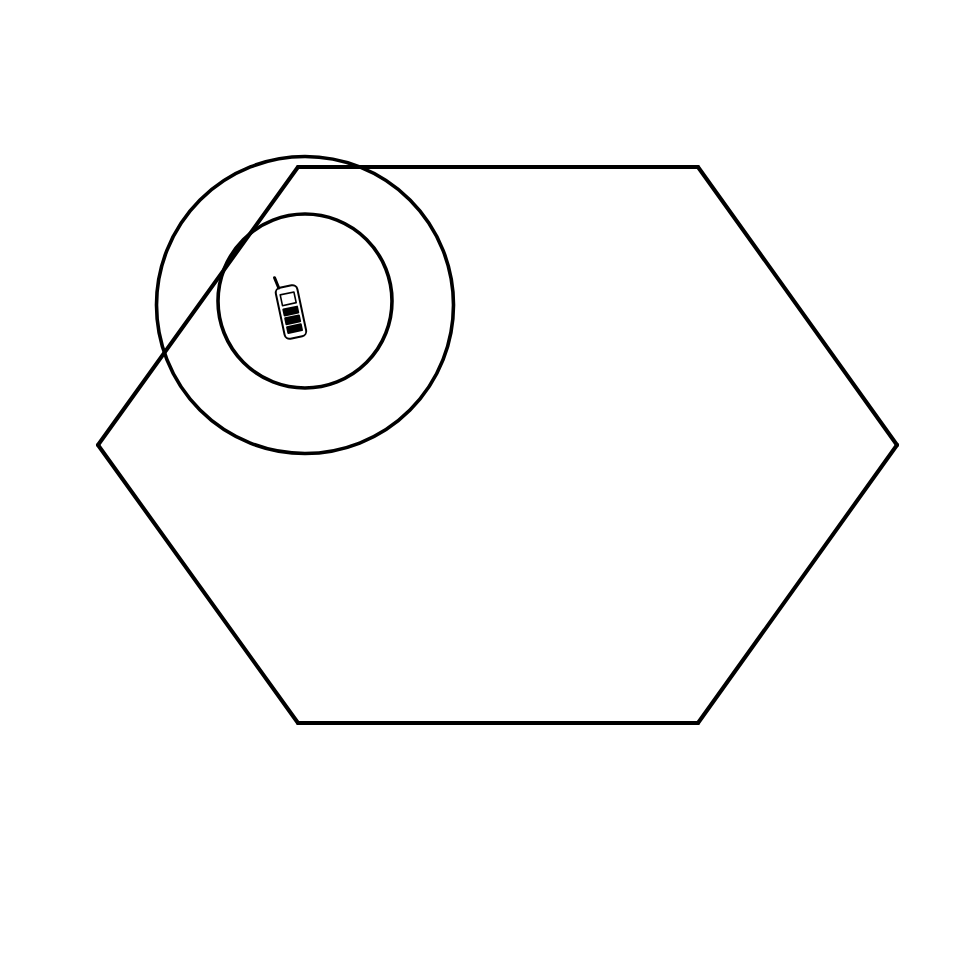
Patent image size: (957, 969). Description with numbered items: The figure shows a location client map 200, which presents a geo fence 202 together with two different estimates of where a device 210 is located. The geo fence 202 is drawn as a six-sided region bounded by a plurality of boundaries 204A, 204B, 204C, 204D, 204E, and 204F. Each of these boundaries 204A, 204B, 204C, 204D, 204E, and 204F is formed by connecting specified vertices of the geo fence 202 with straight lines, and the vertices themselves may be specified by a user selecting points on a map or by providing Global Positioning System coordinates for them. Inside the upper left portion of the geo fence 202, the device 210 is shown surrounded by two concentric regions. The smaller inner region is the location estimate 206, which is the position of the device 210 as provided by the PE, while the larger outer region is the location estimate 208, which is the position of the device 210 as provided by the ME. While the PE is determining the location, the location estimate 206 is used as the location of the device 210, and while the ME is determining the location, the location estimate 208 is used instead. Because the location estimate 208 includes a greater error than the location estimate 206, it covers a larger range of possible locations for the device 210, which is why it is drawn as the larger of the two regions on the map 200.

The location client map 200 is at (143, 95).
The geo fence 202 is at (608, 196).
The boundary 204A is at (473, 167).
The boundary 204B is at (119, 414).
The boundary 204C is at (219, 610).
The boundary 204D is at (540, 722).
The boundary 204E is at (818, 556).
The boundary 204F is at (825, 344).
The location estimate 206 is at (338, 247).
The location estimate 208 is at (281, 177).
The device 210 is at (295, 291).